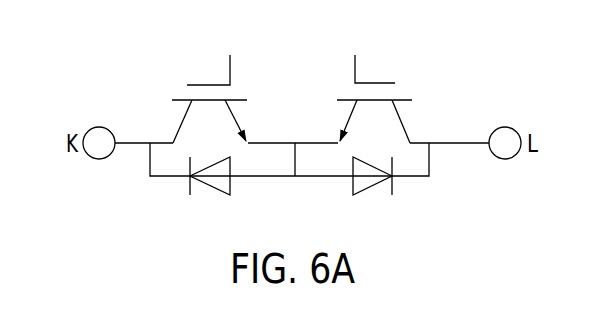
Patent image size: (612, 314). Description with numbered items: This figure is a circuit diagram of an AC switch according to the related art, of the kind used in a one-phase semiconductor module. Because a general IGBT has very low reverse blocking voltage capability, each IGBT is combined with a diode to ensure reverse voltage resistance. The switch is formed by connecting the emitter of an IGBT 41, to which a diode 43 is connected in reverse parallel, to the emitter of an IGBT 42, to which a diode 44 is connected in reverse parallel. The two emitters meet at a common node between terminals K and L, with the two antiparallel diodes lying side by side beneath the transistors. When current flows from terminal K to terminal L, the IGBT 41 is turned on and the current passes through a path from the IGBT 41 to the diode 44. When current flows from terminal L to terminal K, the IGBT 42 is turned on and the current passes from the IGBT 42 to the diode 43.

The IGBT 41 is at (205, 85).
The IGBT 42 is at (380, 83).
The diode 43 is at (213, 188).
The diode 44 is at (367, 190).